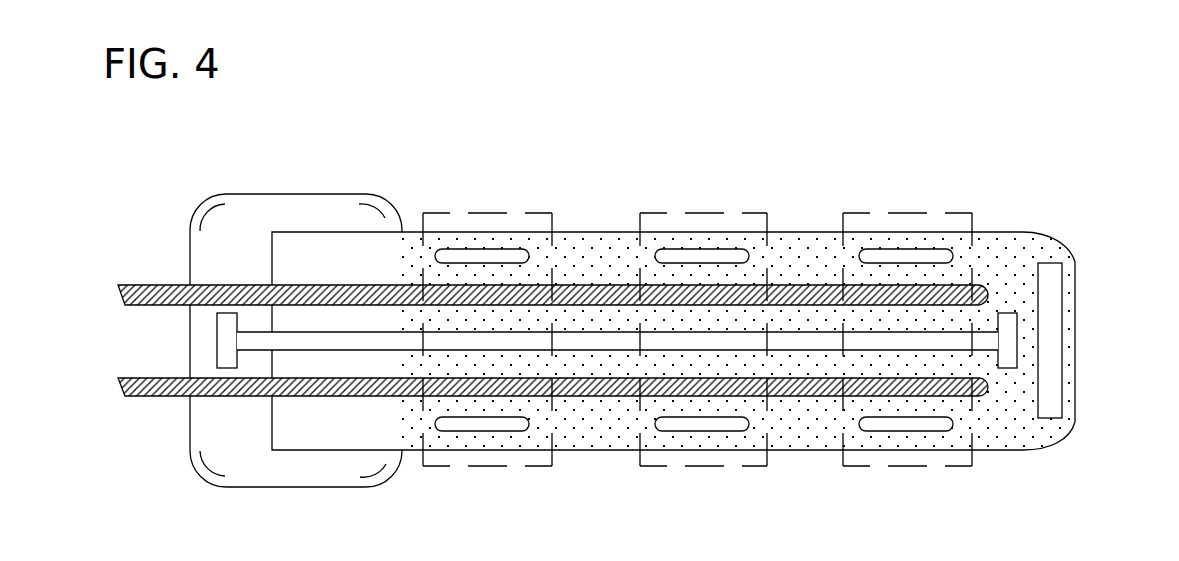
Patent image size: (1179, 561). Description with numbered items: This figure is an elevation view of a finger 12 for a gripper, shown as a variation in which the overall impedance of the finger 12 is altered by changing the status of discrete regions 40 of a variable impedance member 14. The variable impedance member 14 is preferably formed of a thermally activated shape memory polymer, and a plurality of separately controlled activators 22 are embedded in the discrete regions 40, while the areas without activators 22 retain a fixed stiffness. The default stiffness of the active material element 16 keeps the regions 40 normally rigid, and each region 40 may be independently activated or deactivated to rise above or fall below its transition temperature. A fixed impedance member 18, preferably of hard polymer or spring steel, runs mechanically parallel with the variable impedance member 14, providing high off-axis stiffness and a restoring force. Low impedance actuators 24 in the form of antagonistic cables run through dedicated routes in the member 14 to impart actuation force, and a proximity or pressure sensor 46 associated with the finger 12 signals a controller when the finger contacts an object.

The finger 12 is at (1092, 229).
The variable impedance member 14 is at (1038, 197).
The active material element 16 is at (845, 450).
The fixed impedance member 18 is at (217, 348).
The activator 22 is at (485, 431).
The low impedance actuator 24 is at (980, 397).
The discrete region 40 is at (691, 506).
The proximity or pressure sensor 46 is at (1063, 342).